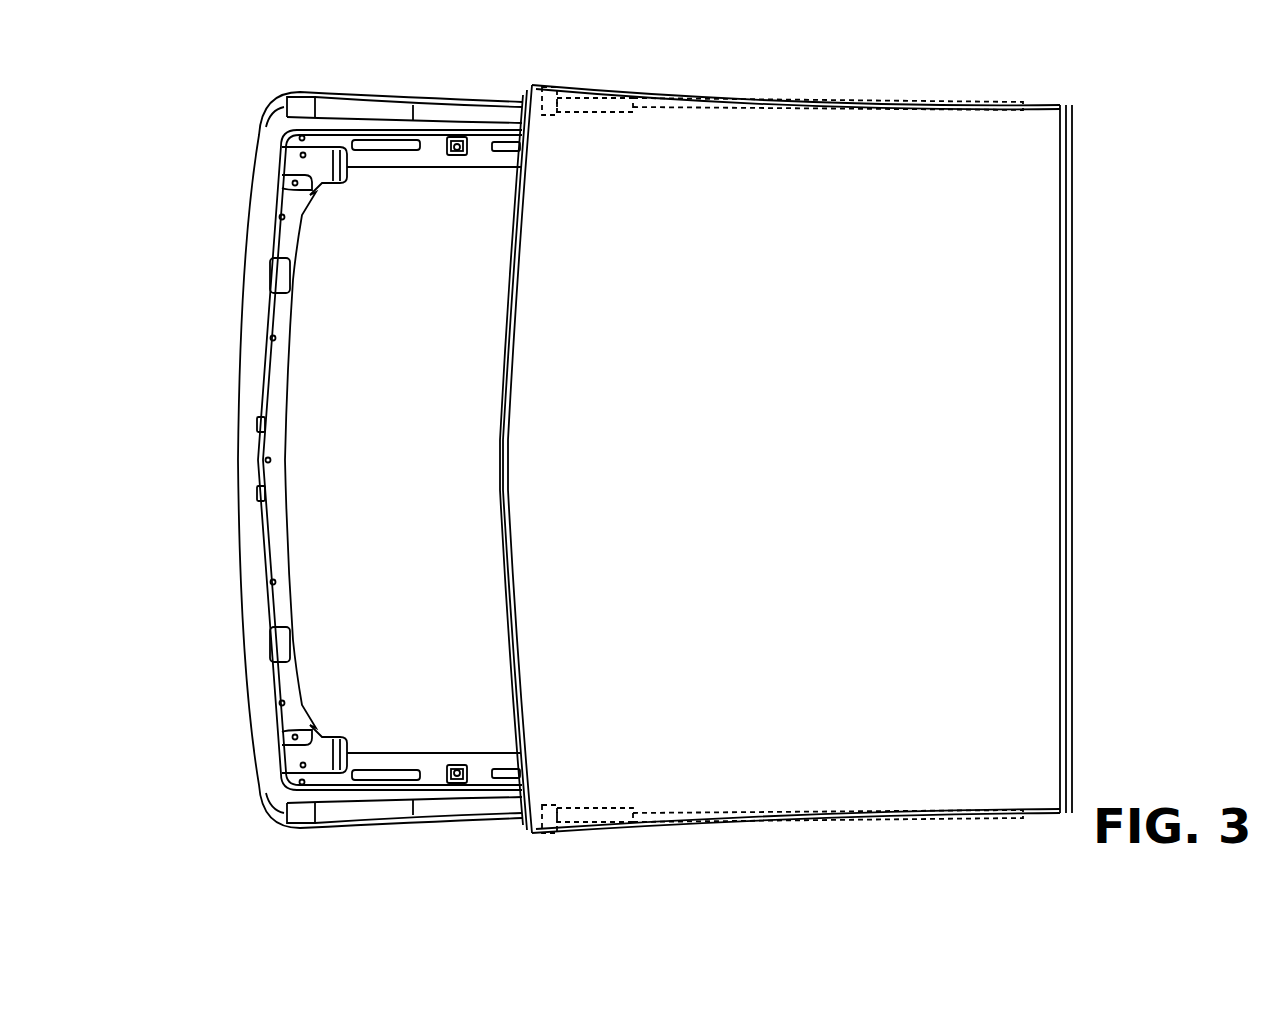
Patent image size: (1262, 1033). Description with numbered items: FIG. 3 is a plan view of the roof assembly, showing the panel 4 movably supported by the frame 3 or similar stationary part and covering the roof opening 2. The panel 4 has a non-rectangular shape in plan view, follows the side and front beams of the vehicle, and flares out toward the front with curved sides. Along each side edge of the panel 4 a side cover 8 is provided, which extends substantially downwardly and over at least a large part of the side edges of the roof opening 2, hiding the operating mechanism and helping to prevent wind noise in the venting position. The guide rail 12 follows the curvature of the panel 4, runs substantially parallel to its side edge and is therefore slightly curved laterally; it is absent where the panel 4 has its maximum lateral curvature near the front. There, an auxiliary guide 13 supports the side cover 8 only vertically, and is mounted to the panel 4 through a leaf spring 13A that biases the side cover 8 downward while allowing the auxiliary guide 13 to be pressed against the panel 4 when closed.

The roof opening 2 is at (407, 481).
The frame 3 is at (246, 472).
The panel 4 is at (794, 477).
The side cover 8 is at (433, 115).
The guide rail 12 is at (912, 100).
The auxiliary guide 13 is at (548, 86).
The leaf spring 13A is at (611, 92).